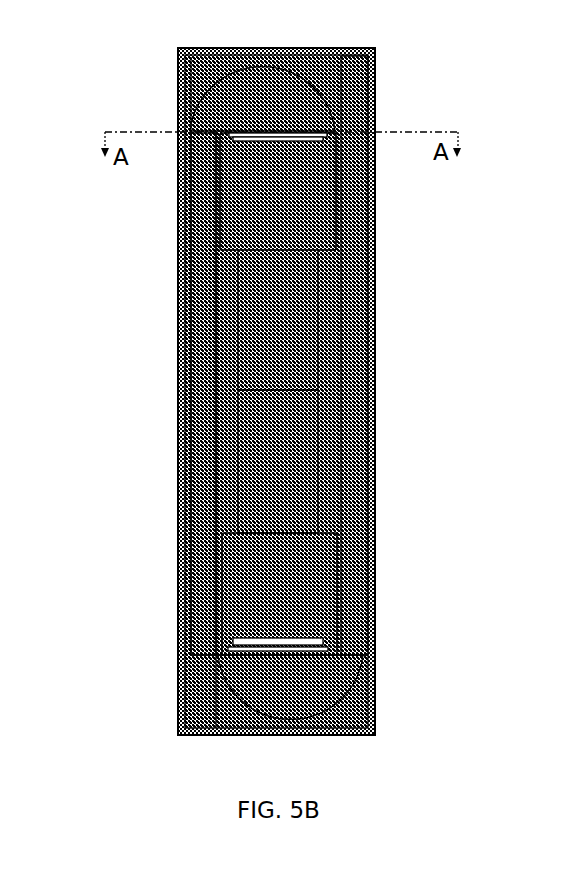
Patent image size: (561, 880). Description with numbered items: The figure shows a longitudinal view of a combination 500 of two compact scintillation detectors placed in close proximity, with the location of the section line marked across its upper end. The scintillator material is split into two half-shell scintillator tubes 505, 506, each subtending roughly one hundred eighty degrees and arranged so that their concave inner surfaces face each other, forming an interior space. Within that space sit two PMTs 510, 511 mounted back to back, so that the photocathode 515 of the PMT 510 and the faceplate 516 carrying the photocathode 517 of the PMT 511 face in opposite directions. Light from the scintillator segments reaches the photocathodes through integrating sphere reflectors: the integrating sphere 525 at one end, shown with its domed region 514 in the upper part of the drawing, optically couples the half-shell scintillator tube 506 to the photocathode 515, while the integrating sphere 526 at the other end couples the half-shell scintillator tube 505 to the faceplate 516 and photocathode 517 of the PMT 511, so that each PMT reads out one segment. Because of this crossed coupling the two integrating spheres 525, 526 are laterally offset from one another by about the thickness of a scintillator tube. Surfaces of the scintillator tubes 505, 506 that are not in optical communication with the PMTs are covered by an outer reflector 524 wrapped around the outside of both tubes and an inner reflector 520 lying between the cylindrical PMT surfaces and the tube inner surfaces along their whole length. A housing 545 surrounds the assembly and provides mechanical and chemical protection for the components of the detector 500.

The combination 500 is at (390, 417).
The half-shell scintillator tube 505 is at (192, 433).
The half-shell scintillator tube 506 is at (365, 510).
The PMT 510 is at (265, 180).
The PMT 511 is at (303, 578).
The first lens 514 is at (343, 128).
The photocathode 515 is at (332, 136).
The photocathode 516 is at (280, 660).
The photocathode 517 is at (335, 652).
The inner reflector 520 is at (338, 283).
The outer reflector 524 is at (365, 462).
The integrating sphere reflector 525 is at (363, 48).
The integrating sphere reflector 526 is at (207, 712).
The housing 545 is at (192, 603).